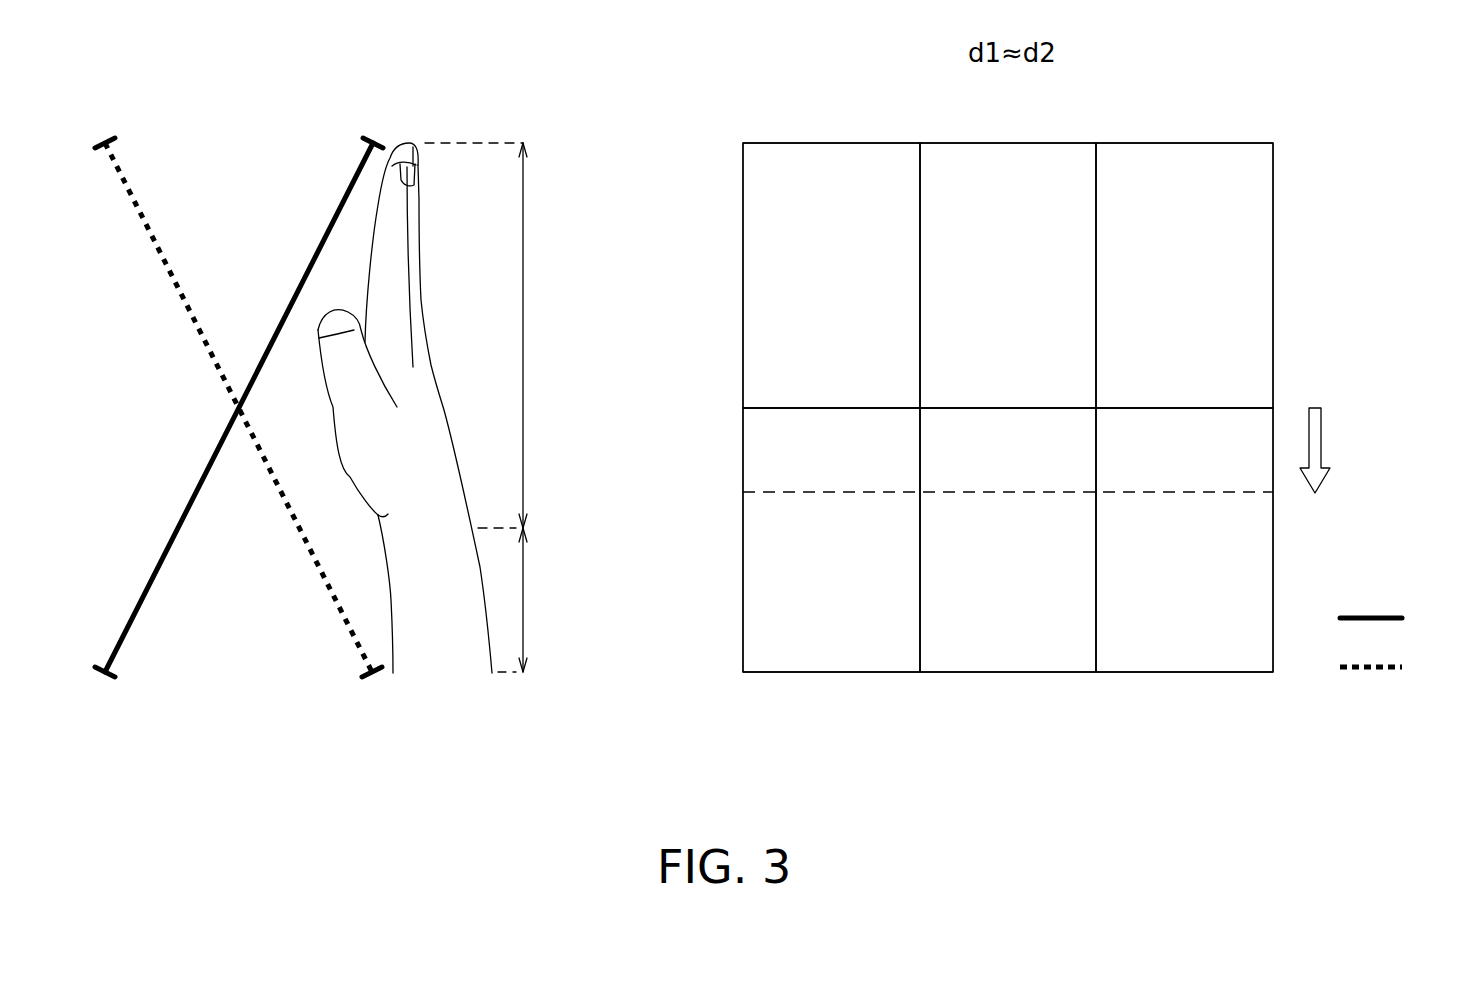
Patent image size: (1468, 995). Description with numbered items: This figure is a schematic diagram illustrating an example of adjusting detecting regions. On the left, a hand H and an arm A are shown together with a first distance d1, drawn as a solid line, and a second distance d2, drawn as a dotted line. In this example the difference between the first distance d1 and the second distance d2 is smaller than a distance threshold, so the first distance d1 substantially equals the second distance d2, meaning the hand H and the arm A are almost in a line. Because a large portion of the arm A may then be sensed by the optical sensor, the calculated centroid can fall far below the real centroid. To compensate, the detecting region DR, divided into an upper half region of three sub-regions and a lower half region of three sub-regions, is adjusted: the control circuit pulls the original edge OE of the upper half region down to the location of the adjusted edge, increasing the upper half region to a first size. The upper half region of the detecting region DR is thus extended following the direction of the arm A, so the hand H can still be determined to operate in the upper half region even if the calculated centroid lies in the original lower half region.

The original edge OE is at (743, 408).
The detecting region DR is at (1273, 273).
The first distance d1 is at (770, 407).
The second distance d2 is at (770, 411).
The hand H is at (489, 335).
The arm A is at (515, 600).